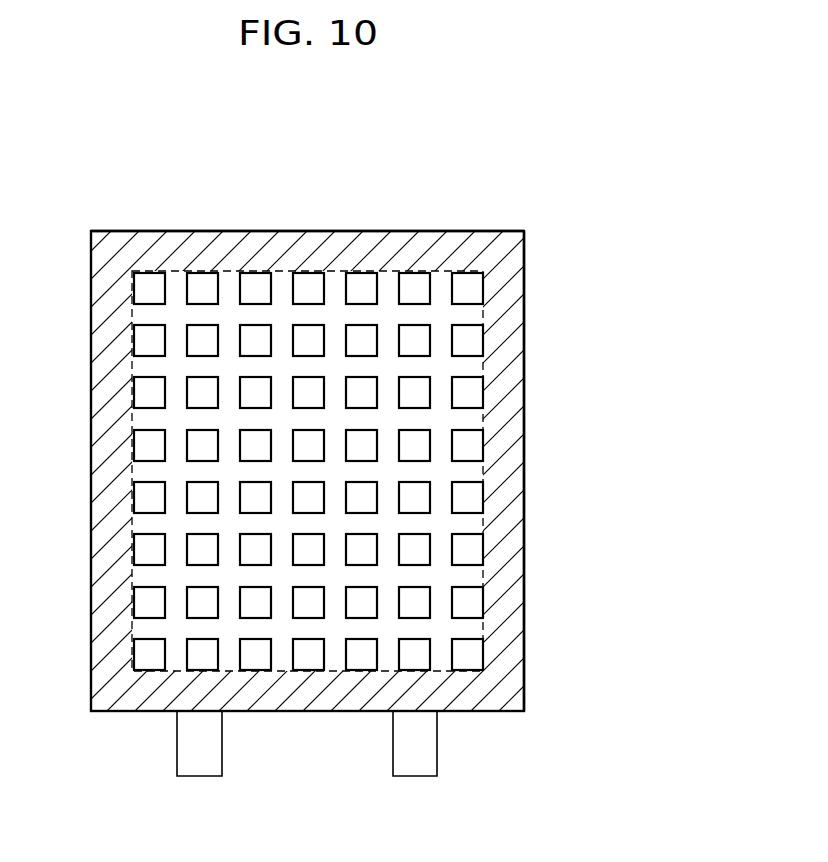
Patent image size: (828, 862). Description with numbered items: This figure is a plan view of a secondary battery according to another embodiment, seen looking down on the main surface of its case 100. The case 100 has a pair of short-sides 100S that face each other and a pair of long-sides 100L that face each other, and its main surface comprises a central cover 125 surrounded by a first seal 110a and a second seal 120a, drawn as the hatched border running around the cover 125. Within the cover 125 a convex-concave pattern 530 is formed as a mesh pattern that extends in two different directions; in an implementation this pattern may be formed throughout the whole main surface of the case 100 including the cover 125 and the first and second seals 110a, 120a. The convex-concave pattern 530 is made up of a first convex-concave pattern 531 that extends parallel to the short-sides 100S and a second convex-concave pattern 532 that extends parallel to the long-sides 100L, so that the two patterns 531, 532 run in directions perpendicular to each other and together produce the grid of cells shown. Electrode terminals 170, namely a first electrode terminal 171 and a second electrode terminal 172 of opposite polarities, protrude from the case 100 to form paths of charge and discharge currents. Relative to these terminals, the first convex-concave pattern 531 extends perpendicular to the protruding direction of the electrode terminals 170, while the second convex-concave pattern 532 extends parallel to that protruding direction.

The case 100 is at (371, 494).
The short-sides 100S is at (309, 231).
The long-sides 100L is at (524, 472).
The second seal 120a is at (392, 471).
The first seal 110a is at (503, 392).
The cover 125 is at (388, 272).
The convex-concave pattern 530 is at (266, 404).
The first convex-concave pattern 531 is at (138, 315).
The second convex-concave pattern 532 is at (306, 424).
The electrode terminals 170 is at (306, 786).
The first electrode terminal 171 is at (198, 786).
The second electrode terminal 172 is at (414, 786).